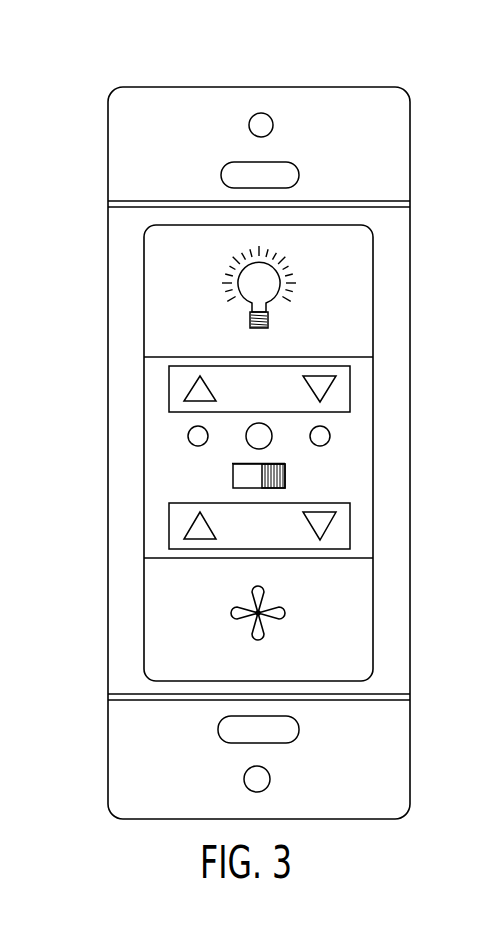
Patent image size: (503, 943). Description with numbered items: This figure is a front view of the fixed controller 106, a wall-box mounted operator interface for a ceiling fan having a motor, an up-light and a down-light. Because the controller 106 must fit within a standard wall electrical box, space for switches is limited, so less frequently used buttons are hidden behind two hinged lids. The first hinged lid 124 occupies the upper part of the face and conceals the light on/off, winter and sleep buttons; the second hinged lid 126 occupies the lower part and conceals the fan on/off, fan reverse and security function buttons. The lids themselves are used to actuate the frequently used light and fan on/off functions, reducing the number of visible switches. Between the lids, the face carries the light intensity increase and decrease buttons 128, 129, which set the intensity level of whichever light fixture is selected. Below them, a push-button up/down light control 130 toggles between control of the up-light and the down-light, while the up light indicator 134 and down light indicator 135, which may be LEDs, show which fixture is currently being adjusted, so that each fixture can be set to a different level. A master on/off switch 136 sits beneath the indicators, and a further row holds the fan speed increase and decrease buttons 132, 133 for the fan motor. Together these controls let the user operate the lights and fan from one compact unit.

The fixed controller 106 is at (326, 75).
The first hinged lid 124 is at (350, 290).
The second hinged lid 126 is at (337, 636).
The light intensity increase button 128 is at (186, 398).
The light intensity decrease button 129 is at (330, 387).
The push-button up/down light control 130 is at (260, 432).
The fan speed increase button 132 is at (186, 525).
The fan speed decrease button 133 is at (330, 525).
The up light indicator 134 is at (190, 435).
The down light indicator 135 is at (330, 436).
The master on/off switch 136 is at (233, 483).